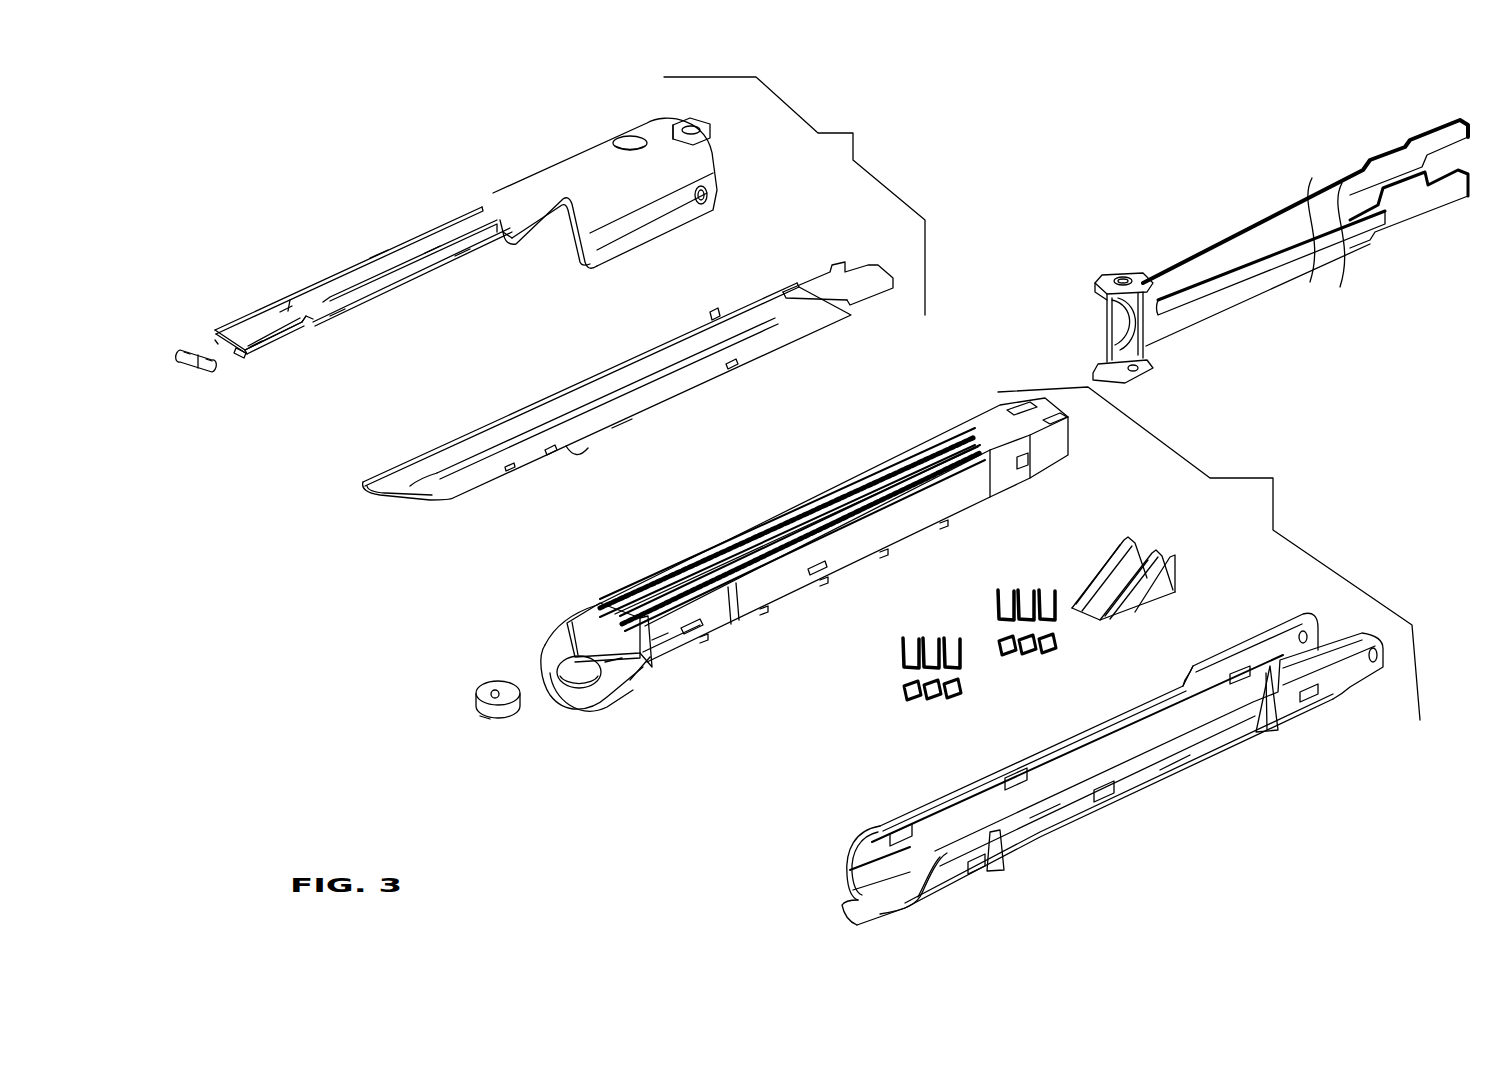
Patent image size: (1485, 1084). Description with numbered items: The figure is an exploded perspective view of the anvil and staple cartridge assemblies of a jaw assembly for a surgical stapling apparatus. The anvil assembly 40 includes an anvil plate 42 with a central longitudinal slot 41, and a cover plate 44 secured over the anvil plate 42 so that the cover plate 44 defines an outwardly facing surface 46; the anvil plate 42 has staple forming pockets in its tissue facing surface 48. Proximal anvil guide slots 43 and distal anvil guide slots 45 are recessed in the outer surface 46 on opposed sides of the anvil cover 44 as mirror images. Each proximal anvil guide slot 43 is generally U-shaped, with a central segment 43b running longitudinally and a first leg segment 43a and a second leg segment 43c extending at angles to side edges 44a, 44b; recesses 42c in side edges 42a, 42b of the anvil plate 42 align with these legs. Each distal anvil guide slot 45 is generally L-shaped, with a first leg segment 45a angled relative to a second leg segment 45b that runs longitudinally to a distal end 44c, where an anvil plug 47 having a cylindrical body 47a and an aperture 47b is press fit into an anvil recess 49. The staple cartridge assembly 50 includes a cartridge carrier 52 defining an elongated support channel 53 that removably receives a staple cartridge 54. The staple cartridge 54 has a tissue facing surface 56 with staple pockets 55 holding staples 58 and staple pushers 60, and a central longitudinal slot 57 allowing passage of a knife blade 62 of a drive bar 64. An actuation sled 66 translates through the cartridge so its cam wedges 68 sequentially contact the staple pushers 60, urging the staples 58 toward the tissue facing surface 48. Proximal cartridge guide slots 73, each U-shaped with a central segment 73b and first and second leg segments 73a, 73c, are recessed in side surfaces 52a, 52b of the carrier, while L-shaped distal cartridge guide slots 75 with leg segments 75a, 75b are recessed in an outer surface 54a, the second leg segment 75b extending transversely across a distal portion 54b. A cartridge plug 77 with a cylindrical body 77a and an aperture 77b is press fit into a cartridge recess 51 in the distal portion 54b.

The anvil assembly 40 is at (794, 196).
The central longitudinal slot 41 is at (808, 290).
The anvil plate 42 is at (651, 333).
The side edge 42a is at (584, 371).
The side edge 42b is at (622, 425).
The recesses 42c is at (550, 460).
The proximal anvil guide slots 43 is at (320, 266).
The first leg segment 43a is at (500, 242).
The central segment 43b is at (434, 253).
The second leg segment 43c is at (337, 316).
The cover plate 44 is at (444, 192).
The side edge 44a is at (378, 255).
The side edge 44b is at (463, 253).
The distal end 44c is at (230, 358).
The distal anvil guide slots 45 is at (247, 303).
The first leg segment 45a is at (306, 323).
The second leg segment 45b is at (258, 352).
The outwardly facing surface 46 is at (287, 308).
The anvil plug 47 is at (176, 364).
The cylindrical body 47a is at (201, 369).
The aperture 47b is at (187, 366).
The tissue facing surface 48 is at (587, 440).
The anvil recess 49 is at (214, 348).
The staple cartridge assembly 50 is at (1209, 553).
The cartridge recess 51 is at (575, 675).
The cartridge carrier 52 is at (940, 782).
The side surface 52a is at (1043, 812).
The side surface 52b is at (985, 777).
The elongated support channel 53 is at (897, 889).
The staple cartridge 54 is at (947, 417).
The outer surface 54a is at (606, 626).
The distal portion 54b is at (558, 603).
The staple pockets 55 is at (874, 466).
The tissue facing surface 56 is at (1030, 458).
The central longitudinal slot 57 is at (990, 425).
The staples 58 is at (915, 637).
The staple pushers 60 is at (945, 695).
The knife blade 62 is at (1093, 311).
The drive bar 64 is at (1277, 181).
The actuation sled 66 is at (1138, 532).
The cam wedges 68 is at (1095, 590).
The proximal cartridge guide slots 73 is at (1147, 792).
The first leg segment 73a is at (1278, 702).
The central segment 73b is at (1175, 764).
The second leg segment 73c is at (1003, 853).
The distal cartridge guide slots 75 is at (635, 672).
The first leg segment 75a is at (651, 640).
The second leg segment 75b is at (611, 662).
The cartridge plug 77 is at (468, 686).
The cylindrical body 77a is at (482, 722).
The aperture 77b is at (493, 690).